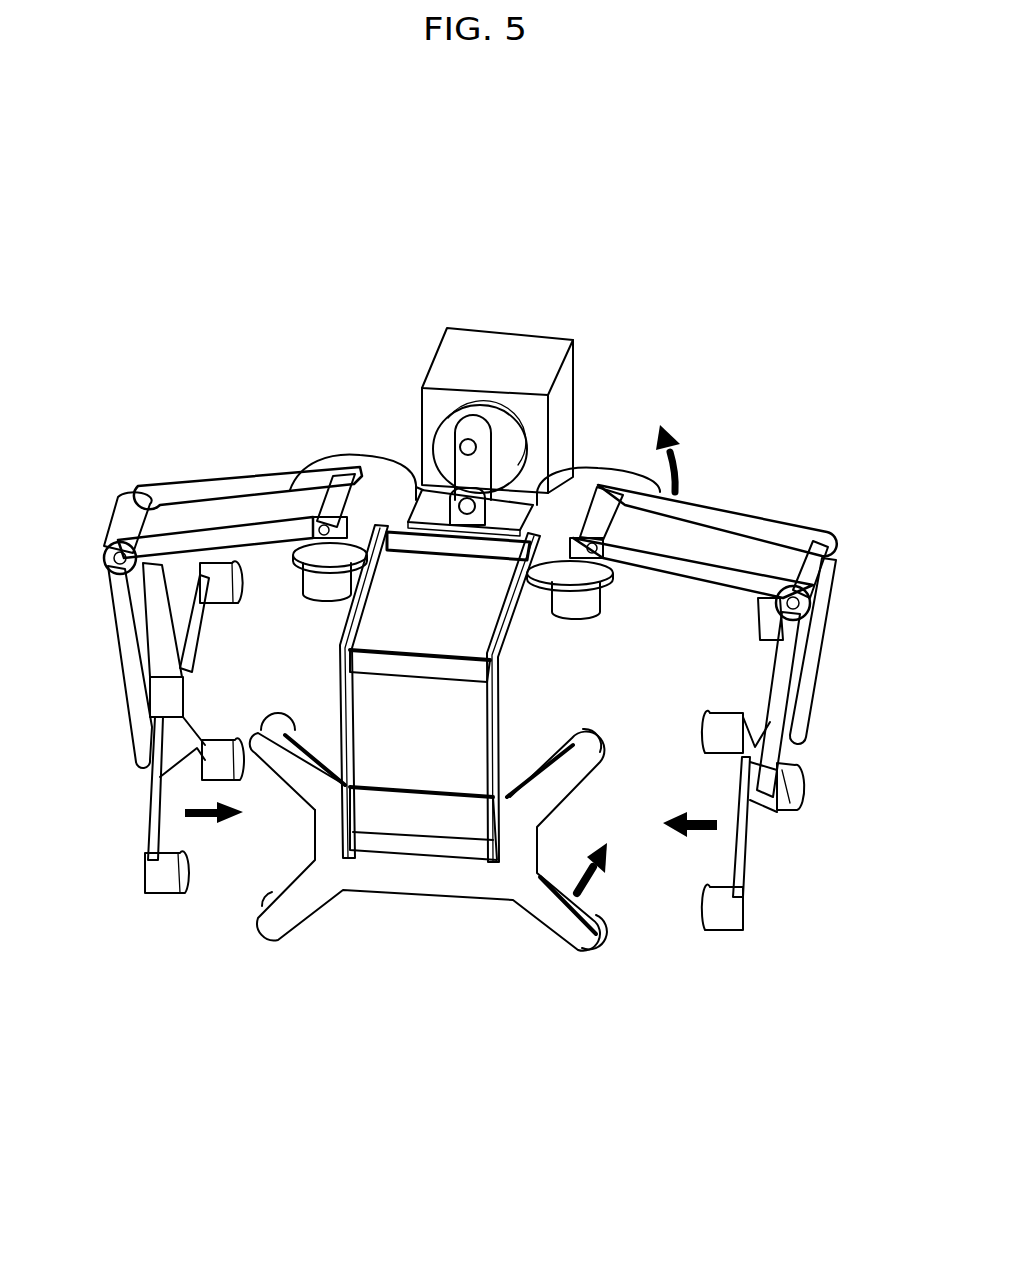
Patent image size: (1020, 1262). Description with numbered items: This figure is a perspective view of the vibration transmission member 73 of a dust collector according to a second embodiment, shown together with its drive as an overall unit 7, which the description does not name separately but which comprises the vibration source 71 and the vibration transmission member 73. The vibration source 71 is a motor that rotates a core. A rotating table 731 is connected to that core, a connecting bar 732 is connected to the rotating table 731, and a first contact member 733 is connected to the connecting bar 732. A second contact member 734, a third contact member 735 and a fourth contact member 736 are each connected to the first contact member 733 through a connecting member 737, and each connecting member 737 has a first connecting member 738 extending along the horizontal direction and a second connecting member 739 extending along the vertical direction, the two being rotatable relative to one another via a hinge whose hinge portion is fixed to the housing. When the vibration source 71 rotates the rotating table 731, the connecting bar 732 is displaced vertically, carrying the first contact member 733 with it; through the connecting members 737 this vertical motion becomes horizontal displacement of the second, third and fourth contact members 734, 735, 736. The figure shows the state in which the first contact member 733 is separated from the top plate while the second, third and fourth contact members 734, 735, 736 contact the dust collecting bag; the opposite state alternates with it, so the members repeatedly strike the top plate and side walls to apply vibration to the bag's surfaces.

The gripping device 7 is at (603, 283).
The vibration source 71 is at (498, 352).
The vibration transmission member 73 is at (328, 377).
The rotating table 731 is at (450, 427).
The connecting bar 732 is at (465, 463).
The first contact member 733 is at (374, 452).
The second contact member 734 is at (152, 785).
The third contact member 735 is at (420, 901).
The fourth contact member 736 is at (805, 800).
The connecting member 737 is at (246, 473).
The first connecting member 738 is at (278, 483).
The second connecting member 739 is at (158, 614).